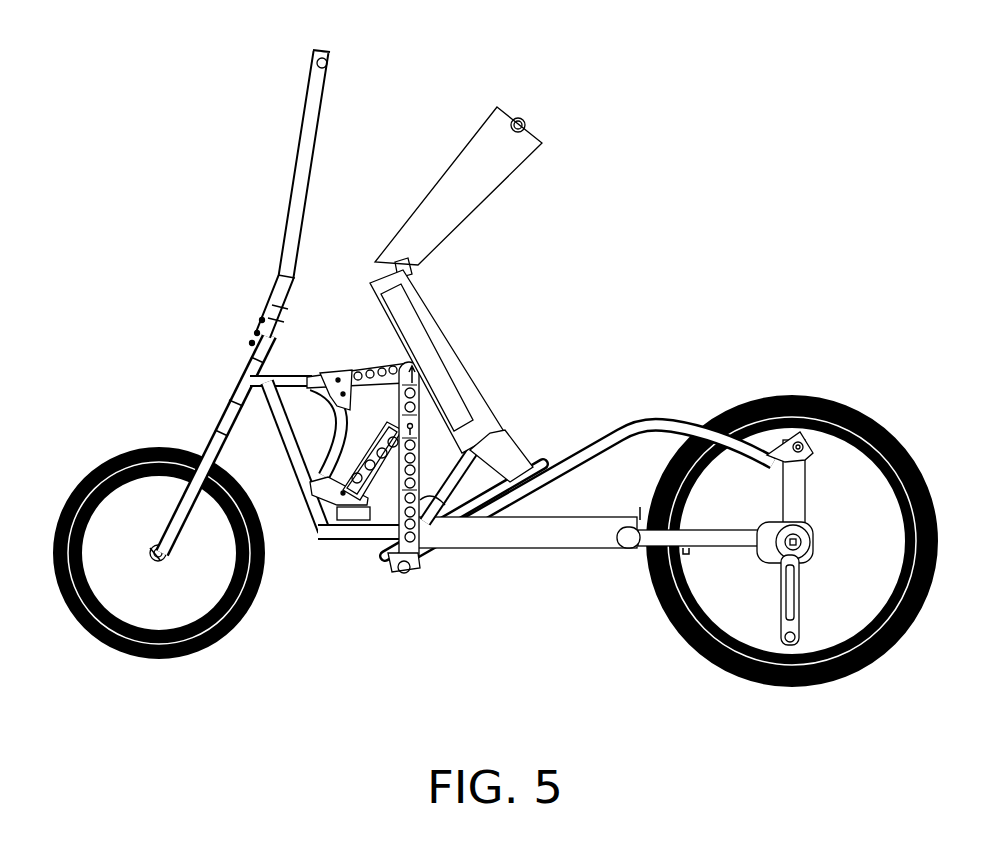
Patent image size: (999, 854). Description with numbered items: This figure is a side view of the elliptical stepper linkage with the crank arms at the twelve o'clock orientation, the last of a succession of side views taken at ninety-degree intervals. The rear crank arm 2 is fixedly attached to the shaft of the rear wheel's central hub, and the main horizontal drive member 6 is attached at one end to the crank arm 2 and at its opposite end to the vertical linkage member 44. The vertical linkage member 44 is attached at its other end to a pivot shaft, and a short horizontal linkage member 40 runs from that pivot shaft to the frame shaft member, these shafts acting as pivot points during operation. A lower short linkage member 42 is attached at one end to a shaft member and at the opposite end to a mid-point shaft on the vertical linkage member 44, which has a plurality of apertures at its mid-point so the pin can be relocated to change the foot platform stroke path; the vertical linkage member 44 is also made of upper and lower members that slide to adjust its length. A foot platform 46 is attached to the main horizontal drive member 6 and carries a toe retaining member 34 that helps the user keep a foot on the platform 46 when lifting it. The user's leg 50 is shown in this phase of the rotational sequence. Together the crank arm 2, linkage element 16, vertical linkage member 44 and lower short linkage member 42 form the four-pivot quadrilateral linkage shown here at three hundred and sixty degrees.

The rear crank arm 2 is at (800, 490).
The main horizontal drive member 6 is at (653, 418).
The linkage element 16 is at (580, 546).
The toe retaining member 34 is at (410, 556).
The short horizontal linkage member 40 is at (350, 364).
The lower short linkage member 42 is at (372, 450).
The vertical linkage member 44 is at (373, 478).
The foot platform 46 is at (487, 510).
The user's leg 50 is at (570, 112).